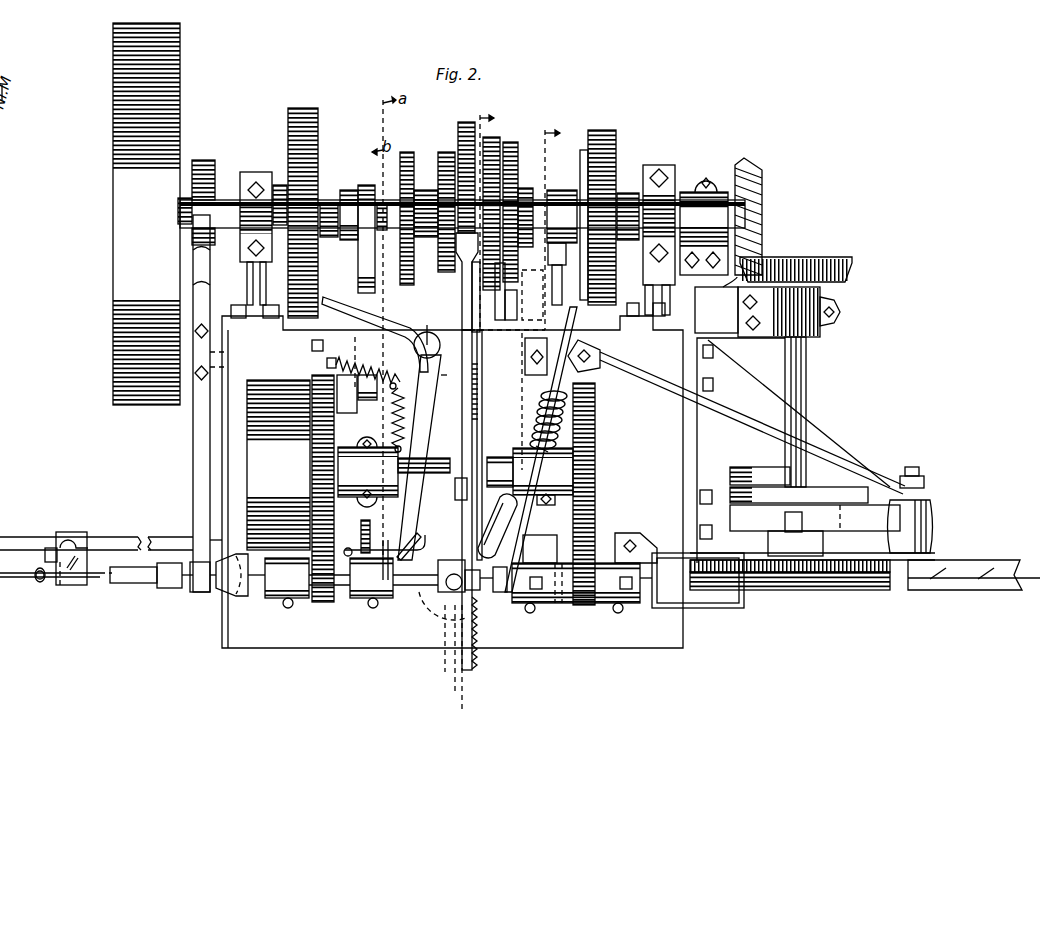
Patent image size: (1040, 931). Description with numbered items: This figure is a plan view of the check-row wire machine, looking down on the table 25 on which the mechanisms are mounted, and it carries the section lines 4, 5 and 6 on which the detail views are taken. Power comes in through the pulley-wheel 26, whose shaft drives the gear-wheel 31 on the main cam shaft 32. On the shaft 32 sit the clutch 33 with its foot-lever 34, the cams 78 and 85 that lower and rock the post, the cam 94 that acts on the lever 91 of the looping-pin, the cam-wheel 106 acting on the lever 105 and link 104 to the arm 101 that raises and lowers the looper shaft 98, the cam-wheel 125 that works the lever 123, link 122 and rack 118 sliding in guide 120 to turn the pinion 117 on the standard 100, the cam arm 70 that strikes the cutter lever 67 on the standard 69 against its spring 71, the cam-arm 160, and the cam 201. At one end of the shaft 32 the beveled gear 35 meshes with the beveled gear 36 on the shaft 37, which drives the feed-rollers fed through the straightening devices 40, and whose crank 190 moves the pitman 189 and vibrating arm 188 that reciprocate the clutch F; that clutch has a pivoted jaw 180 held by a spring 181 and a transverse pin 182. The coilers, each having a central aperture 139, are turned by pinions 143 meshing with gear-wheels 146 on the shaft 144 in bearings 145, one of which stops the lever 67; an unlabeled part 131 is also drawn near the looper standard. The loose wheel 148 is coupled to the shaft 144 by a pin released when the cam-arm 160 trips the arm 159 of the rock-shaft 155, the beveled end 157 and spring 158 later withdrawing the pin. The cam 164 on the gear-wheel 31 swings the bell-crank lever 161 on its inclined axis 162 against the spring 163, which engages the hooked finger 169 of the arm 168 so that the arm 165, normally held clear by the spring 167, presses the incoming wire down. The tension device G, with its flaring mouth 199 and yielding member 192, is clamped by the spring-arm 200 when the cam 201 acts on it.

The pulley-wheel 26 is at (146, 214).
The shaft 32 is at (233, 222).
The spring-arm 200 is at (192, 403).
The cam 201 is at (213, 161).
The gear-wheel 31 is at (311, 110).
The cam 164 is at (350, 243).
The cam-arm 160 is at (370, 244).
The arm 159 is at (368, 298).
The section line 6 6 is at (411, 385).
The section line 5 5 is at (471, 402).
The section line 4 4 is at (507, 420).
The cam 85 is at (407, 152).
The cam 78 is at (444, 160).
The cam-wheel 106 is at (465, 122).
The lever 105 is at (471, 281).
The cam 94 is at (491, 218).
The cam-wheel 125 is at (520, 200).
The cam arm 70 is at (556, 250).
The lever 91 is at (512, 300).
The clutch 33 is at (601, 130).
The standard 69 is at (598, 290).
The foot-lever 34 is at (578, 321).
The beveled gear 35 is at (762, 177).
The beveled gear 36 is at (846, 260).
The shaft 37 is at (806, 375).
The pitman 189 is at (818, 493).
The crank 190 is at (734, 468).
The vibrating arm 188 is at (730, 510).
The central aperture 139 is at (822, 590).
The straightening devices 40 is at (960, 563).
The table 25 is at (452, 482).
The wheel 148 is at (278, 465).
The gear-wheels 146 is at (332, 530).
The pinions 143 is at (312, 600).
The clutch F is at (111, 522).
The spring 181 is at (67, 533).
The pivoted jaw 180 is at (52, 547).
The transverse pin 182 is at (55, 578).
The tension device G is at (157, 592).
The flaring mouth 199 is at (242, 596).
The yielding member 192 is at (216, 598).
The inclined axis 162 is at (428, 328).
The spring 163 is at (360, 363).
The rock-shaft 155 is at (369, 395).
The beveled end 157 is at (386, 405).
The spring 158 is at (393, 432).
The bell-crank lever 161 is at (420, 428).
The link 104 is at (444, 409).
The shaft 144 is at (508, 443).
The arm 101 is at (455, 490).
The arm 168 is at (385, 521).
The hooked finger 169 is at (438, 522).
The spring 167 is at (348, 548).
The arm 165 is at (406, 570).
The hub 131 is at (438, 590).
The pinion 117 is at (452, 592).
The shaft 98 is at (468, 590).
The rack 118 is at (480, 634).
The link 122 is at (484, 401).
The lever 123 is at (507, 391).
The guide 120 is at (525, 357).
The lever 67 is at (541, 394).
The spring 71 is at (536, 422).
The bearings 145 is at (547, 505).
The standard 100 is at (497, 526).